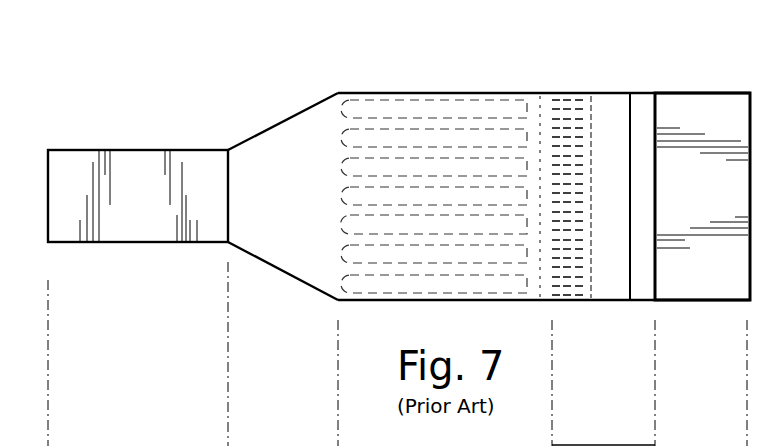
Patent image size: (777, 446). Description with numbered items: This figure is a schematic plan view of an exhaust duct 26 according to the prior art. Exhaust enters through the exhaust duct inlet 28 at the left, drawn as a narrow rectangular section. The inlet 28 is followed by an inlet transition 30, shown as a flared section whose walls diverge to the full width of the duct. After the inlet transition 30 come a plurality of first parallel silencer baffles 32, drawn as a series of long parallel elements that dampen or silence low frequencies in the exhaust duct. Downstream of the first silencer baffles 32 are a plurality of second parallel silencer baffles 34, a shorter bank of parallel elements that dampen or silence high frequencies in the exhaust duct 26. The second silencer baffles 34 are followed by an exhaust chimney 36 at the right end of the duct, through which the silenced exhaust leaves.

The exhaust duct 26 is at (200, 72).
The exhaust duct inlet 28 is at (146, 163).
The inlet transition 30 is at (286, 143).
The first parallel silencer baffles 32 is at (462, 172).
The second parallel silencer baffles 34 is at (583, 123).
The exhaust chimney 36 is at (698, 108).